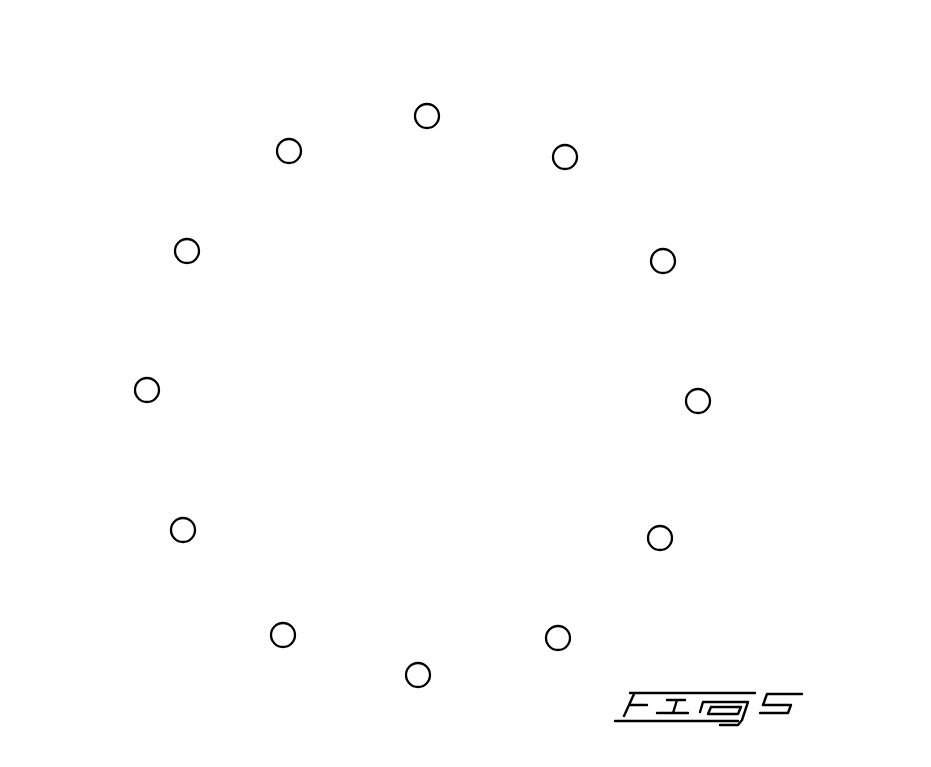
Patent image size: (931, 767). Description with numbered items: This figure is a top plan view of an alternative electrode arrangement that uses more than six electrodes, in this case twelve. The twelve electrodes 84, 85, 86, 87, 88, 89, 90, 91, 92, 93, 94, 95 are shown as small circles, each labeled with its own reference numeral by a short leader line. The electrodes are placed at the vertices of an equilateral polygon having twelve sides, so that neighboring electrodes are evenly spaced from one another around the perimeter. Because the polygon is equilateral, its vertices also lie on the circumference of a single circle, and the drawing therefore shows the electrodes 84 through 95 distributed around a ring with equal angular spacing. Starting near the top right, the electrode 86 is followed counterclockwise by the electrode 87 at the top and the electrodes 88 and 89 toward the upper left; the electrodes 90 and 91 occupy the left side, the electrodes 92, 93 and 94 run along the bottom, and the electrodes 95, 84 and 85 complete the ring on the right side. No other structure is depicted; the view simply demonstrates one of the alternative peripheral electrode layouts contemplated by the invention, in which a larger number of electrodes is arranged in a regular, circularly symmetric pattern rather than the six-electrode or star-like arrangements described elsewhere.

The electrode 84 is at (706, 404).
The electrode 85 is at (673, 261).
The electrode 86 is at (574, 153).
The electrode 87 is at (428, 110).
The electrode 88 is at (286, 144).
The electrode 89 is at (180, 248).
The electrode 90 is at (139, 389).
The electrode 91 is at (174, 532).
The electrode 92 is at (276, 641).
The electrode 93 is at (414, 682).
The electrode 94 is at (560, 648).
The electrode 95 is at (666, 545).